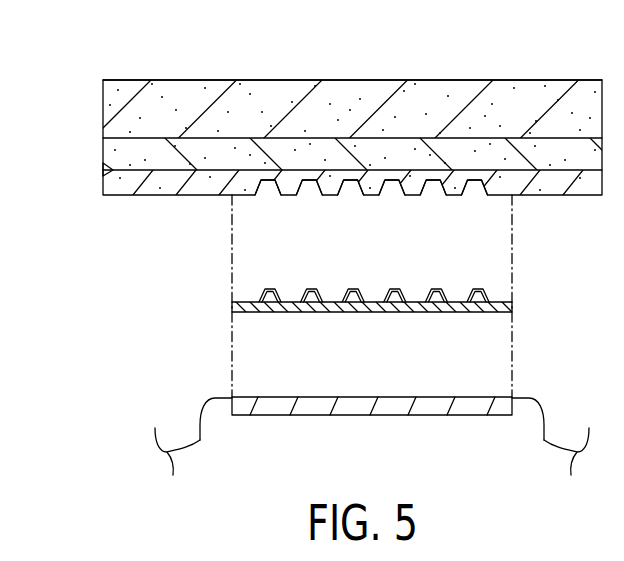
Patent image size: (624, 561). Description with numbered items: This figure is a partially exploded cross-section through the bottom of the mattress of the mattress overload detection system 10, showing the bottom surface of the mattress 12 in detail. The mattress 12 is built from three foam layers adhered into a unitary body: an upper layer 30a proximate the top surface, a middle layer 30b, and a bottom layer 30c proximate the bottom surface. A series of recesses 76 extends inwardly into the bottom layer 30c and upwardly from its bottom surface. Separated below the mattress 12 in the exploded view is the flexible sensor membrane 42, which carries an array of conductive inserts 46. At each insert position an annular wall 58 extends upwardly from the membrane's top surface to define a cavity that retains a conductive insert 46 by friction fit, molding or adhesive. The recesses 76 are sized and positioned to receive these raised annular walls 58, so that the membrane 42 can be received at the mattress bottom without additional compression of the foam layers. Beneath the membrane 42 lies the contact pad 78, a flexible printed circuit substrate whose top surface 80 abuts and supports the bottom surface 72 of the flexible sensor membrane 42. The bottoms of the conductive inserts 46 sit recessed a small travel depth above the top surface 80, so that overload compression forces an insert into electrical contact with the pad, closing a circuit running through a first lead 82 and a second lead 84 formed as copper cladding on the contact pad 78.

The mattress overload detection system 10 is at (455, 48).
The mattress 12 is at (278, 80).
The layer 30a is at (103, 101).
The layer 30b is at (103, 156).
The bottom layer 30c is at (103, 184).
The recesses 76 is at (271, 206).
The flexible sensor membrane 42 is at (512, 302).
The conductive inserts 46 is at (270, 312).
The annular wall 58 is at (385, 289).
The bottom surface of the flexible sensor membrane 72 is at (410, 312).
The top surface of the contact pad 80 is at (395, 397).
The contact pad 78 is at (348, 408).
The first lead 82 is at (200, 440).
The second lead 84 is at (544, 440).